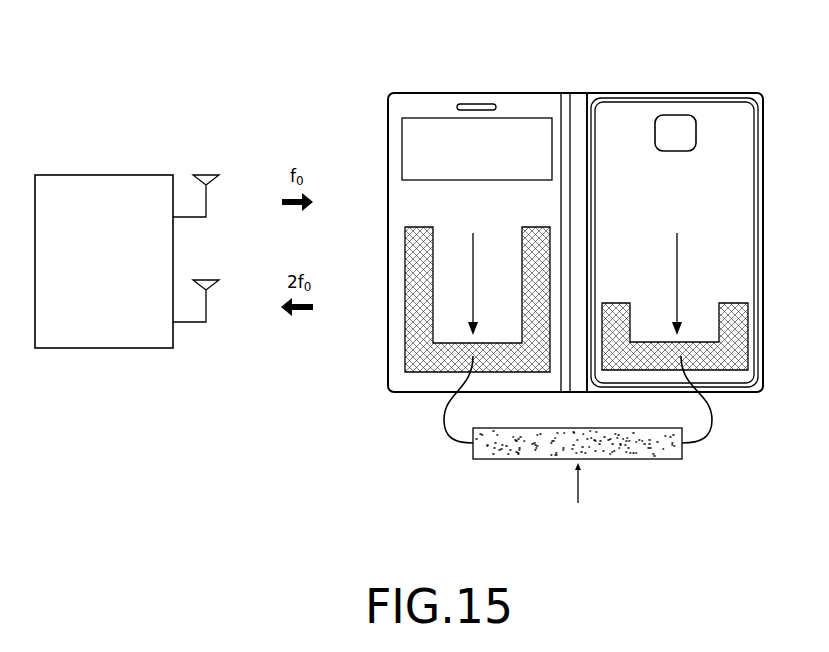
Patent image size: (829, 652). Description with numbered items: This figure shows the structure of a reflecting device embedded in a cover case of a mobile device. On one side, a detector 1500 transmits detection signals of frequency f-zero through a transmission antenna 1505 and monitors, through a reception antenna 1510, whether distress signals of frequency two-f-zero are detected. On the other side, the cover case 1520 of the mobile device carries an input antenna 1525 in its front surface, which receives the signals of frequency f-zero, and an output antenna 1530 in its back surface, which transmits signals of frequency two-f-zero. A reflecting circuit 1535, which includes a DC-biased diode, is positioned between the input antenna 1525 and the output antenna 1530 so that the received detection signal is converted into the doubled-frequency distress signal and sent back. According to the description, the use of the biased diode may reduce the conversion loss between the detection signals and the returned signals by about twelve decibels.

The detector 1500 is at (103, 175).
The transmission antenna 1505 is at (212, 173).
The reception antenna 1510 is at (212, 278).
The cover case 1520 is at (540, 93).
The input antenna 1525 is at (403, 197).
The output antenna 1530 is at (747, 197).
The reflecting circuit 1535 is at (682, 457).